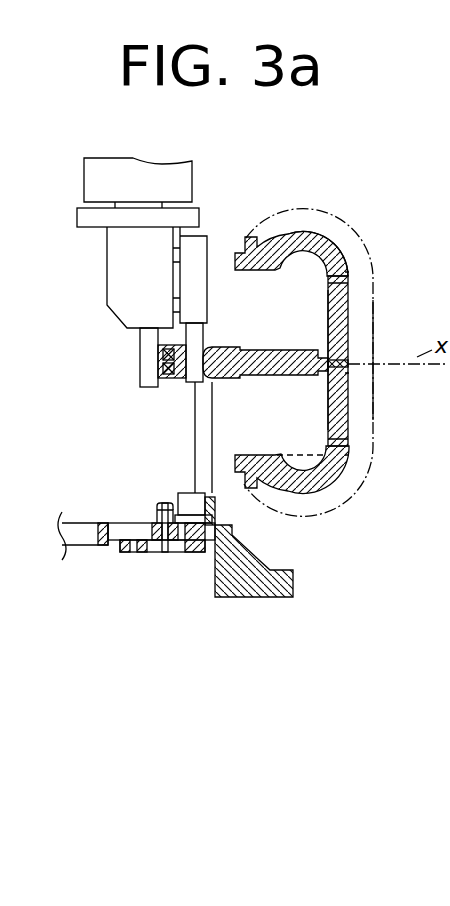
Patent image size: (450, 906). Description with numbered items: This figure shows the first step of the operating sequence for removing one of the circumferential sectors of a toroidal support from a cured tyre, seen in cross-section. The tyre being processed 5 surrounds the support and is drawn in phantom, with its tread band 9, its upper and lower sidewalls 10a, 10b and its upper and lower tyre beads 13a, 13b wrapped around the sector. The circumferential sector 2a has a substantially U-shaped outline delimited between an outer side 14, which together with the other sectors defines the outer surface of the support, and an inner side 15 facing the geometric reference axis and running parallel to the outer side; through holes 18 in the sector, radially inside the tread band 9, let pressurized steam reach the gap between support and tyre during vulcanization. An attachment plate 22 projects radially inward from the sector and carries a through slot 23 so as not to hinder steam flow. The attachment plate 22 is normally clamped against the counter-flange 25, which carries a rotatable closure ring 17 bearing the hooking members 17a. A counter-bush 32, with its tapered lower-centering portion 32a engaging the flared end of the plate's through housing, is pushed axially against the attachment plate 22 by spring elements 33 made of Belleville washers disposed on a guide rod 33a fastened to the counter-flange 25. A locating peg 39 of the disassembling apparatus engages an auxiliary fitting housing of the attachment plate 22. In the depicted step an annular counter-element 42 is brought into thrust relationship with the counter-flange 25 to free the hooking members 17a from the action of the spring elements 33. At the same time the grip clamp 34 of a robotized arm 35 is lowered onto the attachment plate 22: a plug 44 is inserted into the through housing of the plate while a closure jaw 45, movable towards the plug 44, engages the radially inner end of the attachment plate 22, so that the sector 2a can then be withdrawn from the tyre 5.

The robotized arm 35 is at (98, 156).
The grip clamp 34 is at (107, 279).
The closure jaw 45 is at (147, 362).
The plug 44 is at (193, 372).
The locating peg 39 is at (205, 438).
The attachment plate 22 is at (265, 350).
The through slot 23 is at (325, 378).
The outer side 14 is at (347, 316).
The inner side 15 is at (328, 317).
The tyre bead 13a is at (253, 236).
The sidewall 10a is at (287, 202).
The circumferential sector 2a is at (330, 239).
The tyre being processed 5 is at (352, 221).
The tread band 9 is at (377, 280).
The through hole 18 is at (345, 272).
The sidewall 10b is at (303, 551).
The tyre bead 13b is at (253, 480).
The counter-bush 32 is at (183, 464).
The lower-centering portion 32a is at (177, 497).
The hooking member 17a is at (203, 553).
The counter-flange 25 is at (125, 556).
The annular counter-element 42 is at (80, 545).
The guide rod 33a is at (147, 525).
The spring element 33 is at (186, 557).
The closure ring 17 is at (168, 545).